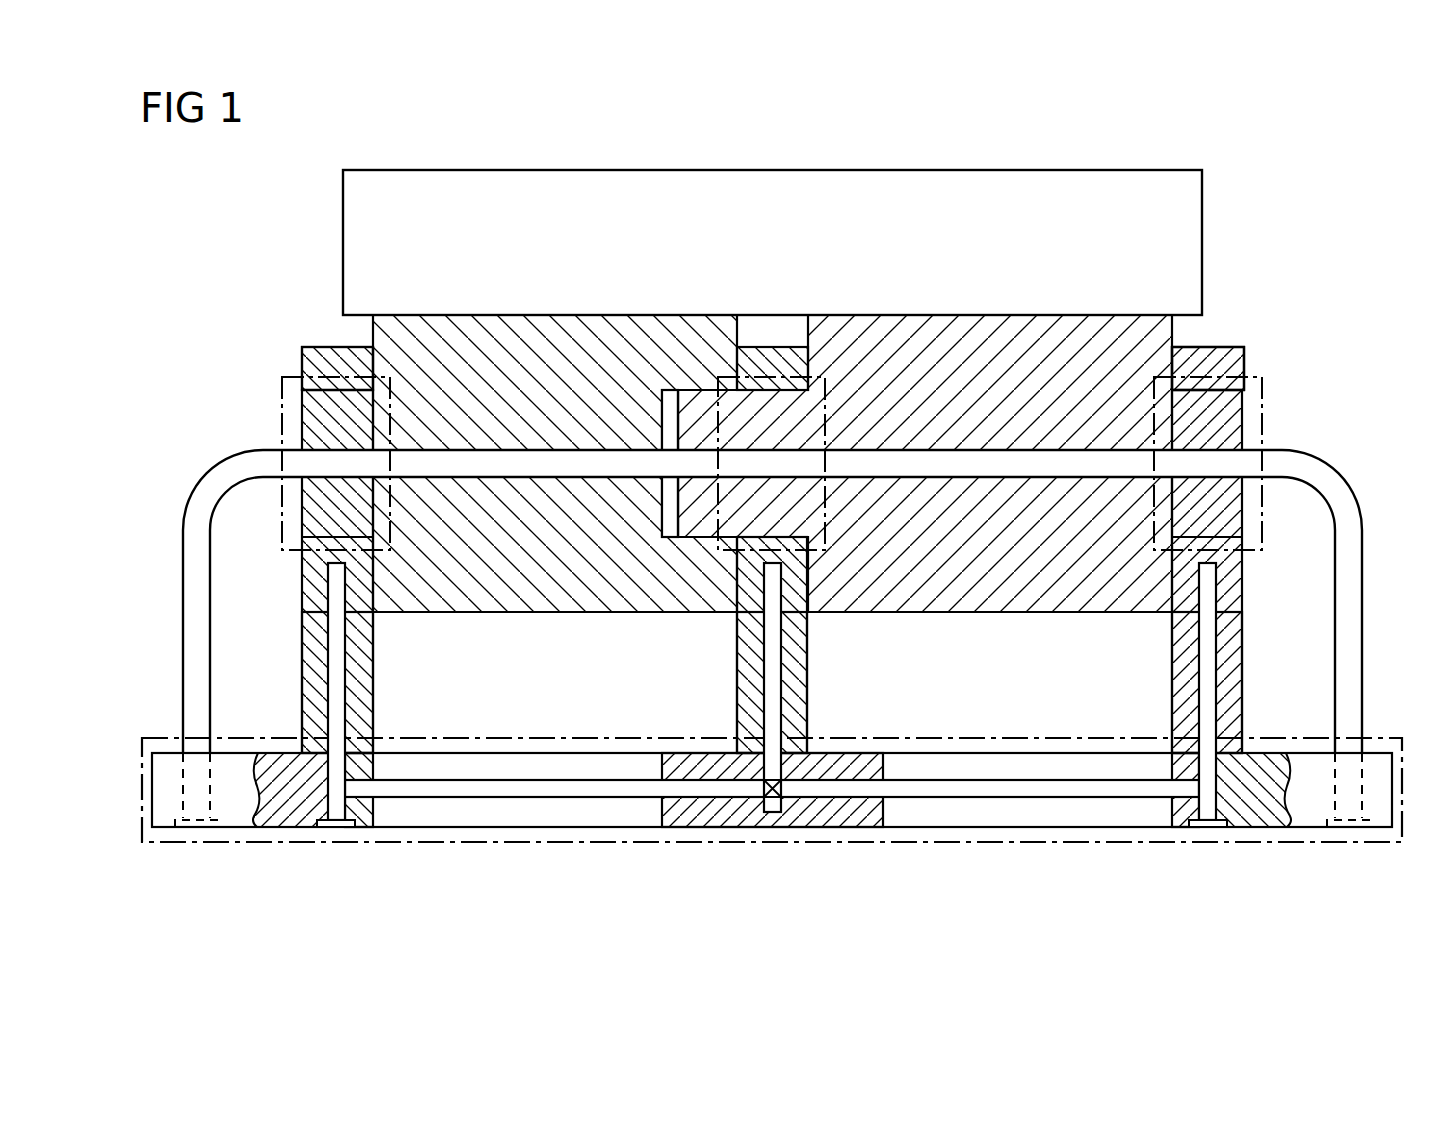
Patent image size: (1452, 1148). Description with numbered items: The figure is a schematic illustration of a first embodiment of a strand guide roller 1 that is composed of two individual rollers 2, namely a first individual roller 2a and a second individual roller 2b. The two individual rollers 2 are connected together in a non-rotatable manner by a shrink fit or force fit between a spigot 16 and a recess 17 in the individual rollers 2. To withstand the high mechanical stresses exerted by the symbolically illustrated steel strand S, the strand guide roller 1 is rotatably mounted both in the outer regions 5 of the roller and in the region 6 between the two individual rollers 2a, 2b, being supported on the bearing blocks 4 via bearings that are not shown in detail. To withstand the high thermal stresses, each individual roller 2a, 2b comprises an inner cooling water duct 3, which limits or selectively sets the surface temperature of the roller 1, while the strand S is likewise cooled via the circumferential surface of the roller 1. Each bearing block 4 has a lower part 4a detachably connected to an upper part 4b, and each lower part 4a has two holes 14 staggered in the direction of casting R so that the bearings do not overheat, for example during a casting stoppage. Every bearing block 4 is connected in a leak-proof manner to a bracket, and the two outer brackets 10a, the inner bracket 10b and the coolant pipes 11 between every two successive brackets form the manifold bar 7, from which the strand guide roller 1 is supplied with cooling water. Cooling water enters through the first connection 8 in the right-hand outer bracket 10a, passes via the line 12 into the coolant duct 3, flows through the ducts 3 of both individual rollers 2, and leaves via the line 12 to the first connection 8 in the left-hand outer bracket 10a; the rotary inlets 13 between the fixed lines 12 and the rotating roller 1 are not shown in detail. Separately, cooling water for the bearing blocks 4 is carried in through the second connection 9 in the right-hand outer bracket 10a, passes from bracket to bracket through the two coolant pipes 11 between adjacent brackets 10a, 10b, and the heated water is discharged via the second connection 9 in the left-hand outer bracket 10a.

The strand guide roller 1 is at (1297, 258).
The individual rollers 2 is at (772, 431).
The first individual roller 2a is at (466, 327).
The second individual roller 2b is at (936, 327).
The inner cooling water duct 3 is at (470, 465).
The bearing blocks 4 is at (319, 311).
The lower part of the bearing block 4a is at (373, 675).
The upper part of the bearing block 4b is at (1218, 346).
The outer regions of the roller 5 is at (292, 377).
The region between the two individual rollers 6 is at (828, 425).
The manifold bar 7 is at (477, 860).
The first connection 8 is at (198, 825).
The second connection 9 is at (333, 829).
The outer brackets 10a is at (258, 735).
The inner bracket 10b is at (869, 733).
The coolant pipes 11 is at (565, 782).
The line 12 is at (194, 463).
The rotary inlets 13 is at (275, 427).
The holes 14 is at (770, 693).
The spigot 16 is at (704, 537).
The recess 17 is at (670, 540).
The steel strand S is at (744, 155).
The direction of casting R is at (861, 122).